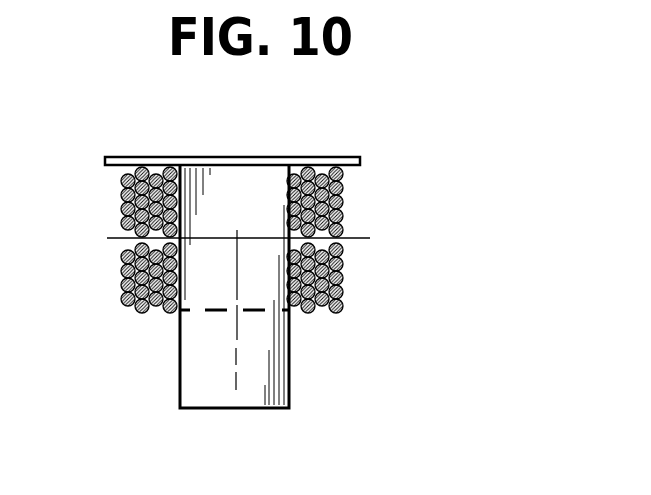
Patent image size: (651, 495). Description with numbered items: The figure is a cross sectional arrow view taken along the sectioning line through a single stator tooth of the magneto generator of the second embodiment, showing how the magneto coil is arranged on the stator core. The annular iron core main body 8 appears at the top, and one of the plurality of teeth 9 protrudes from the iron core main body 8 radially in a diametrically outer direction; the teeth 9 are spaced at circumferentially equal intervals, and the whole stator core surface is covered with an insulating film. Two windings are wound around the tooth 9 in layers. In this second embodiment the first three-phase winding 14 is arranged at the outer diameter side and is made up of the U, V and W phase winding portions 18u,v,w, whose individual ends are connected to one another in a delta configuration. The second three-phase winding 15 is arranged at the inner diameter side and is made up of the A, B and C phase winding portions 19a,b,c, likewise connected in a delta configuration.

The iron core main body 8 is at (257, 367).
The teeth 9 is at (208, 267).
The first three-phase winding 14 is at (122, 184).
The second three-phase winding 15 is at (127, 303).
The U, V and W phase winding portions 18u,v,w is at (345, 197).
The A, B and C phase winding portions 19a,b,c is at (345, 290).